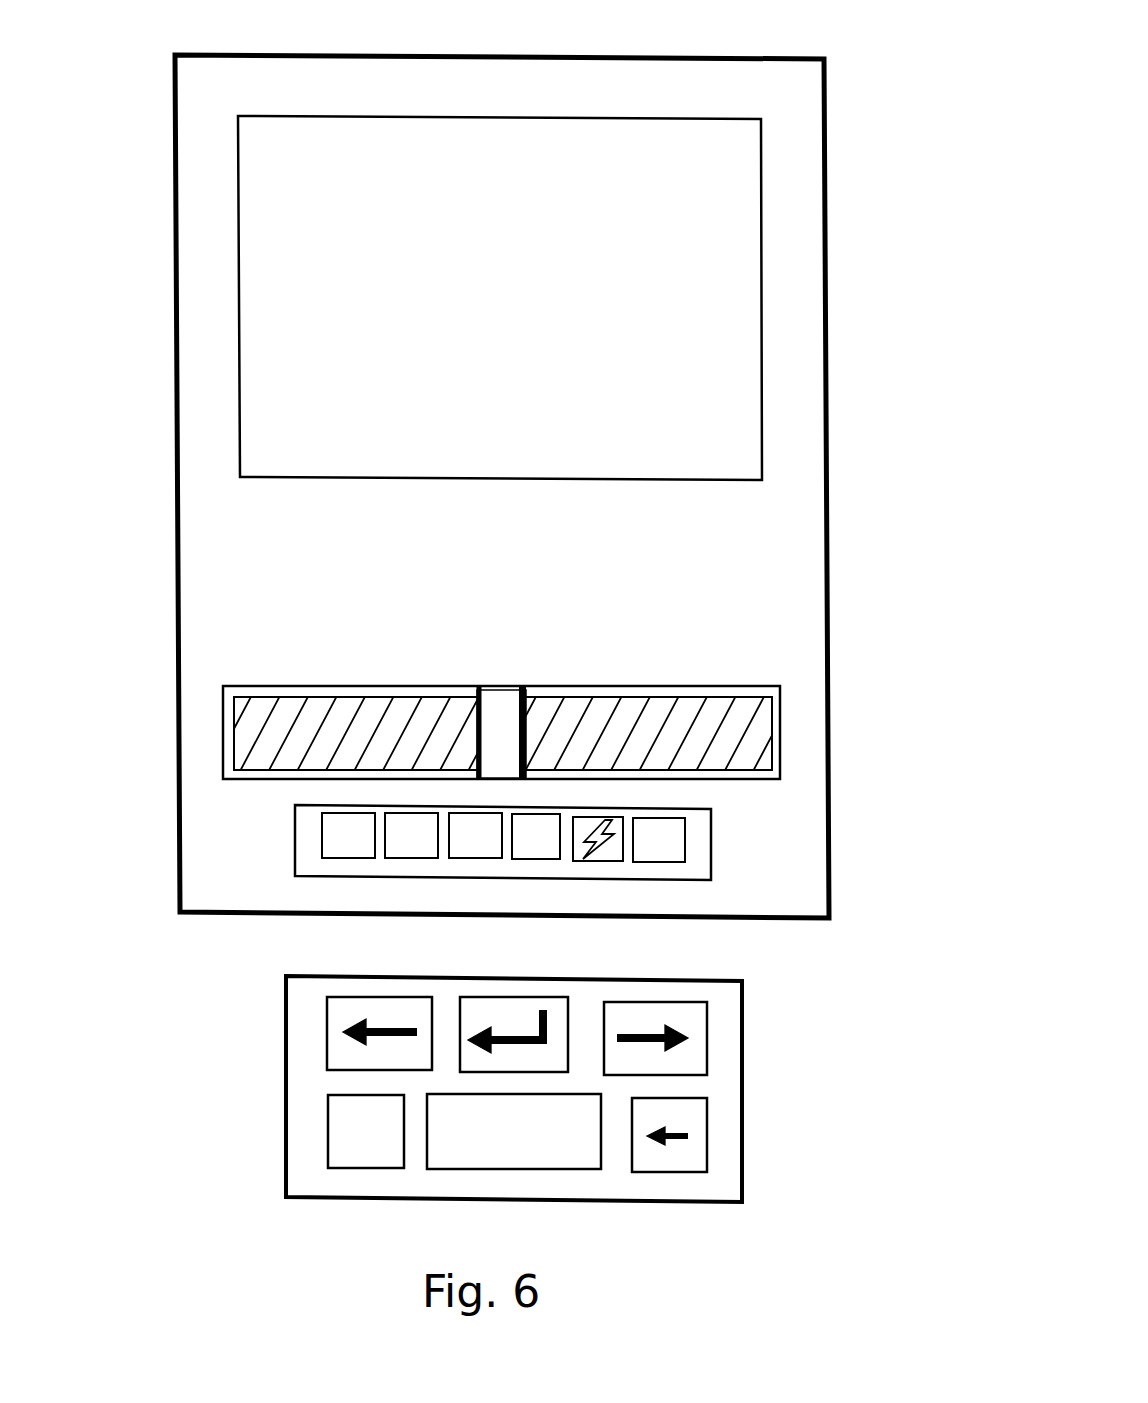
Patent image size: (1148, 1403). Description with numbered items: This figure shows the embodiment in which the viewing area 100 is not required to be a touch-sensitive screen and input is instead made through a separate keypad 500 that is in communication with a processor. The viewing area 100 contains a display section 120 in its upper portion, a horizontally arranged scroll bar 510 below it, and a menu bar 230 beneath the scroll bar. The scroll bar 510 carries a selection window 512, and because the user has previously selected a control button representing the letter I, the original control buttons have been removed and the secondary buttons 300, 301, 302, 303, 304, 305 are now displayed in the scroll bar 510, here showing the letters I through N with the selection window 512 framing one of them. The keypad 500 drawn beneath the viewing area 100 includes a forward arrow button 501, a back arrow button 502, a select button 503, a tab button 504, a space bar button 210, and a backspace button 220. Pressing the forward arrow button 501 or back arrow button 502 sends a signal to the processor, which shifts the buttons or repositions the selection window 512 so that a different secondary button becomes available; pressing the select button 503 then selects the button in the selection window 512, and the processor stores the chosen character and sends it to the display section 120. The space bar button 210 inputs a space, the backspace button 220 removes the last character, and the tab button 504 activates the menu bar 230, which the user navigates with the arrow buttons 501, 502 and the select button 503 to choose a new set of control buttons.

The viewing area 100 is at (631, 22).
The display section 120 is at (221, 212).
The scroll bar 510 is at (488, 681).
The selection window 512 is at (500, 681).
The secondary button 300 is at (370, 697).
The secondary button 301 is at (419, 696).
The secondary button 302 is at (457, 696).
The secondary button 303 is at (517, 701).
The secondary button 304 is at (558, 701).
The secondary button 305 is at (605, 702).
The menu bar 230 is at (736, 835).
The keypad 500 is at (503, 1084).
The forward arrow button 501 is at (683, 980).
The back arrow button 502 is at (379, 979).
The select button 503 is at (543, 979).
The tab button 504 is at (309, 1124).
The space bar button 210 is at (469, 1185).
The backspace button 220 is at (728, 1121).